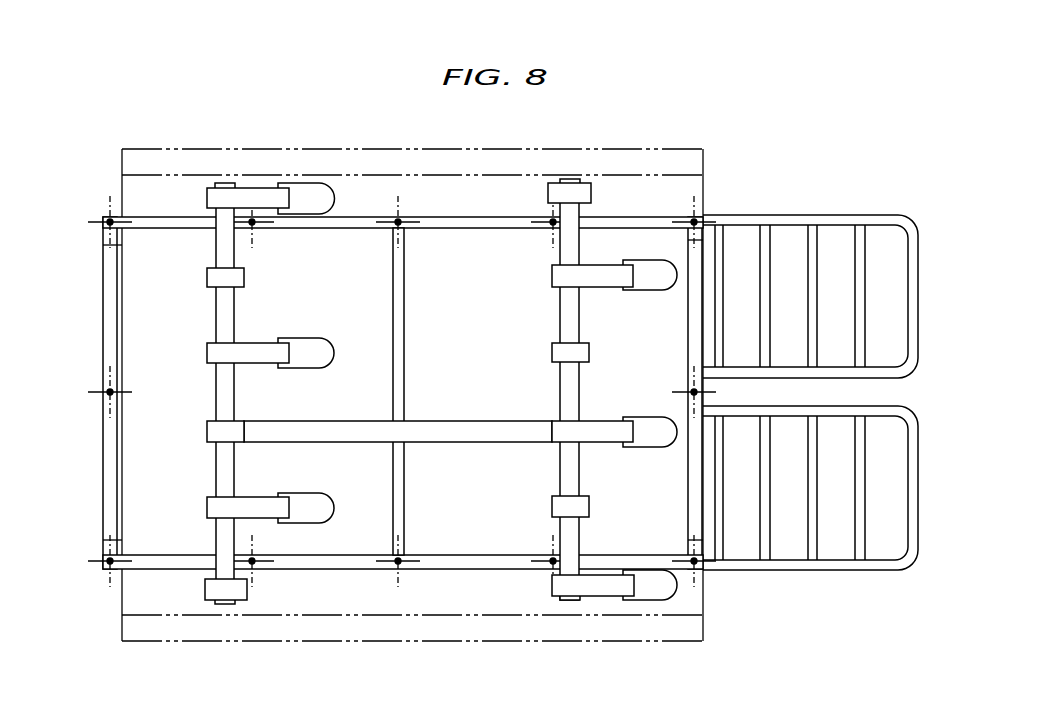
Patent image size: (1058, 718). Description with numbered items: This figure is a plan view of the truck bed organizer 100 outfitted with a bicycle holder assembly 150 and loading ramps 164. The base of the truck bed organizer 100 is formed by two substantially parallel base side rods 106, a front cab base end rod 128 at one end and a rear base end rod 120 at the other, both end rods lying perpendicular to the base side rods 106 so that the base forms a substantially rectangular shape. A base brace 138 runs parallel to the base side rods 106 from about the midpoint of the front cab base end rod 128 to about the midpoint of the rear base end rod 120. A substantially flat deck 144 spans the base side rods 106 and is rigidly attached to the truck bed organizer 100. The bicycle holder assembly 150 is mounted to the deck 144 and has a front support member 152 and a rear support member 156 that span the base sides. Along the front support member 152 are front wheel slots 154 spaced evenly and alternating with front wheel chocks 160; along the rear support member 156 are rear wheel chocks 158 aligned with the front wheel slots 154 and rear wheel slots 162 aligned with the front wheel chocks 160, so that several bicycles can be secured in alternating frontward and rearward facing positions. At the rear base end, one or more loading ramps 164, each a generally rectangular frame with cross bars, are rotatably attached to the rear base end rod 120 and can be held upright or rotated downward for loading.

The truck bed organizer 100 is at (720, 192).
The base side rod 106 is at (453, 229).
The rear base end rod 120 is at (688, 378).
The front cab base end rod 128 is at (122, 336).
The base brace 138 is at (408, 412).
The deck 144 is at (122, 614).
The bicycle holder assembly 150 is at (203, 588).
The front support member 152 is at (238, 312).
The front wheel slot 154 is at (263, 210).
The rear support member 156 is at (560, 312).
The rear wheel chock 158 is at (591, 193).
The front wheel chock 160 is at (207, 279).
The rear wheel slot 162 is at (600, 288).
The loading ramp 164 is at (834, 211).